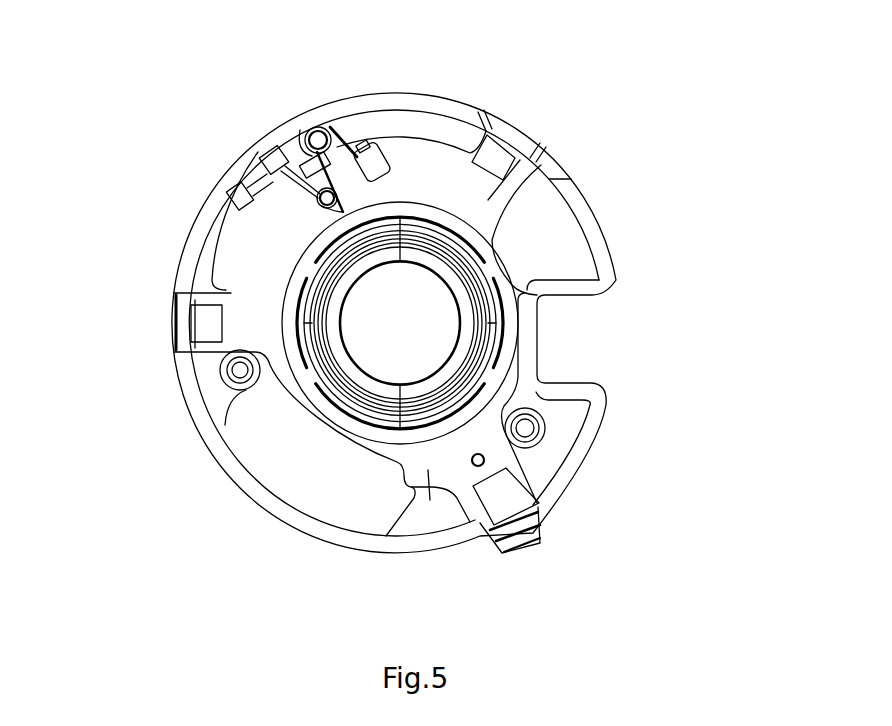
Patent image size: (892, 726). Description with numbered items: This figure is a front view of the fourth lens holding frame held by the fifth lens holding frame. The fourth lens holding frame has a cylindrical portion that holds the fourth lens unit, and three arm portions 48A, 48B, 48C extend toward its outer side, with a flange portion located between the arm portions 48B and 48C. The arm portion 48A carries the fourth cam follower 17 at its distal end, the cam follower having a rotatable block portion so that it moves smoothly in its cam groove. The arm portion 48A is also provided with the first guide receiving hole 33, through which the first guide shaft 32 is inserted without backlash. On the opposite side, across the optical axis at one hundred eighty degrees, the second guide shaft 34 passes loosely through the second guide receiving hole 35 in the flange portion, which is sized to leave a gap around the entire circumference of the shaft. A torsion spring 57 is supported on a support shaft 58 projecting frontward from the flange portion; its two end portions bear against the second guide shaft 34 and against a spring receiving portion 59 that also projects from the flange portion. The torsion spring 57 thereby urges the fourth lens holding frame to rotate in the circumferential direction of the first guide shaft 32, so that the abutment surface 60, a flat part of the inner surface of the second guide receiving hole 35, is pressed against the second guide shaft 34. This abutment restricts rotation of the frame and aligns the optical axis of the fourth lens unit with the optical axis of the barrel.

The fourth cam follower 17 is at (545, 520).
The first guide shaft 32 is at (487, 462).
The first guide receiving hole 33 is at (483, 458).
The second guide shaft 34 is at (319, 193).
The second guide receiving hole 35 is at (315, 192).
The arm portion 48A is at (437, 468).
The arm portion 48B is at (210, 352).
The arm portion 48C is at (500, 193).
The torsion spring 57 is at (337, 127).
The support shaft 58 is at (318, 128).
The spring receiving portion 59 is at (383, 143).
The abutment surface 60 is at (318, 204).